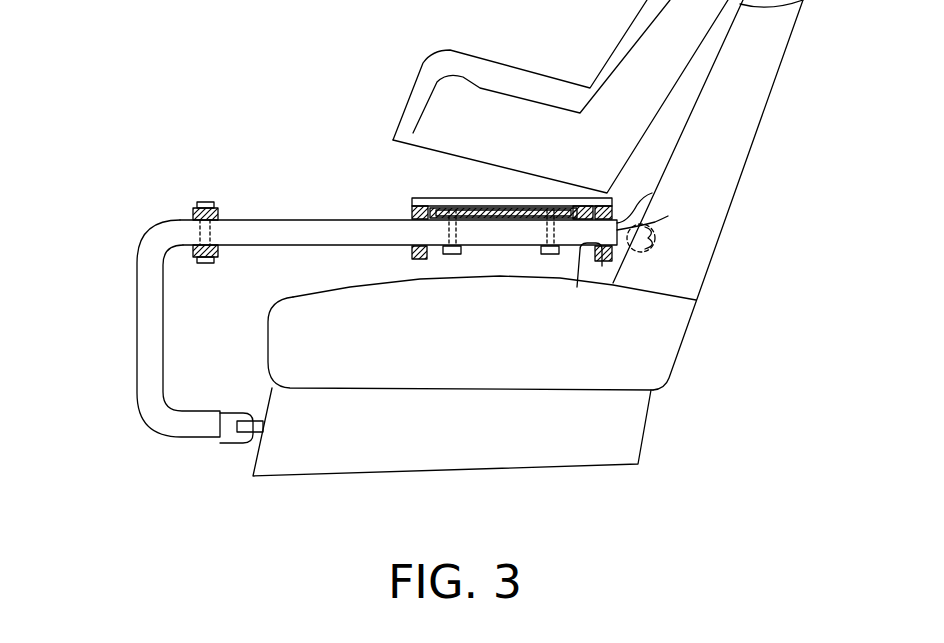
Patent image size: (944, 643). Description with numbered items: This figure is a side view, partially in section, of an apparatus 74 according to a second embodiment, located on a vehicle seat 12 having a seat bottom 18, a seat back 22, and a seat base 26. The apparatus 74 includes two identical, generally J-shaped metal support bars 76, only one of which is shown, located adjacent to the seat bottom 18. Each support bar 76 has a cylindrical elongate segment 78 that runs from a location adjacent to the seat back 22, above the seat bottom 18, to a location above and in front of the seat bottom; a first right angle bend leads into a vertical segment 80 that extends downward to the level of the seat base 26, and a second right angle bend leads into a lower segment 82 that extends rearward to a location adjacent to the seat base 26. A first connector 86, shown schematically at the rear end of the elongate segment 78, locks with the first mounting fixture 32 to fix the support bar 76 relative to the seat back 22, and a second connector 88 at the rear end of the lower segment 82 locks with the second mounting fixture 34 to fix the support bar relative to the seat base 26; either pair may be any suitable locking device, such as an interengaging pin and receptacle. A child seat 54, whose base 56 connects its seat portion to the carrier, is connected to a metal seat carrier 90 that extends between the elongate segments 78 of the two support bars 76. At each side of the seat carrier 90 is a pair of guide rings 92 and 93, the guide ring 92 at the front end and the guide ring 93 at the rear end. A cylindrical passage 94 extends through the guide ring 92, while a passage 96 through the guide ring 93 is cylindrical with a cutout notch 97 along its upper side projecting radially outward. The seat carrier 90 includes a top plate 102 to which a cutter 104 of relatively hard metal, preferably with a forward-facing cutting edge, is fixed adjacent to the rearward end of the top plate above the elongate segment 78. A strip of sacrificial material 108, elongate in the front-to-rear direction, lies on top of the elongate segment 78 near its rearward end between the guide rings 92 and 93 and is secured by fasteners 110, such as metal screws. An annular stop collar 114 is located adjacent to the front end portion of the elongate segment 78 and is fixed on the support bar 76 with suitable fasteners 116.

The vehicle seat 12 is at (792, 97).
The seat bottom 18 is at (676, 341).
The seat back 22 is at (760, 128).
The seat base 26 is at (646, 426).
The first mounting fixture 32 is at (656, 244).
The second mounting fixture 34 is at (260, 418).
The child seat 54 is at (592, 58).
The base 56 is at (455, 187).
The apparatus 74 is at (158, 107).
The support bar 76 is at (136, 289).
The elongate segment 78 is at (299, 230).
The vertical segment 80 is at (146, 340).
The lower segment 82 is at (187, 430).
The first connector 86 is at (660, 218).
The second connector 88 is at (243, 410).
The seat carrier 90 is at (397, 258).
The guide ring 92 is at (415, 261).
The guide ring 93 is at (602, 268).
The cylindrical passage 94 is at (417, 222).
The passage 96 is at (577, 284).
The cutout notch 97 is at (645, 202).
The top plate 102 is at (543, 206).
The cutter 104 is at (578, 206).
The strip of sacrificial material 108 is at (502, 208).
The fasteners 110 is at (452, 255).
The stop collar 114 is at (193, 212).
The fasteners 116 is at (203, 200).